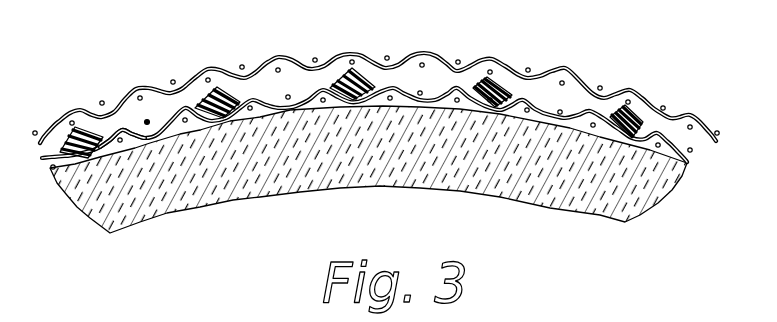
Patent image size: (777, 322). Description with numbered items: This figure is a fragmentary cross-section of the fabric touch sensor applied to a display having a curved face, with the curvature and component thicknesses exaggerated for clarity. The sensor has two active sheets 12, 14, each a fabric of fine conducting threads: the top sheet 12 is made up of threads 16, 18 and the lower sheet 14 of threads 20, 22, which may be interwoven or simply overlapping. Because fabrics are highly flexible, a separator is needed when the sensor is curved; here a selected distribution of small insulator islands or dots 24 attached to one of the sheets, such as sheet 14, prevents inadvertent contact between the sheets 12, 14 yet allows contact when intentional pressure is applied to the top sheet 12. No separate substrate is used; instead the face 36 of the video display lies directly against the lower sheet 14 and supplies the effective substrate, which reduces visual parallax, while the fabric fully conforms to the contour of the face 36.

The sheet 12 is at (376, 96).
The sheet 14 is at (672, 135).
The thread 16 is at (263, 65).
The thread 18 is at (318, 58).
The thread 20 is at (130, 131).
The thread 22 is at (147, 122).
The insulator dots 24 is at (476, 84).
The face 36 is at (593, 132).